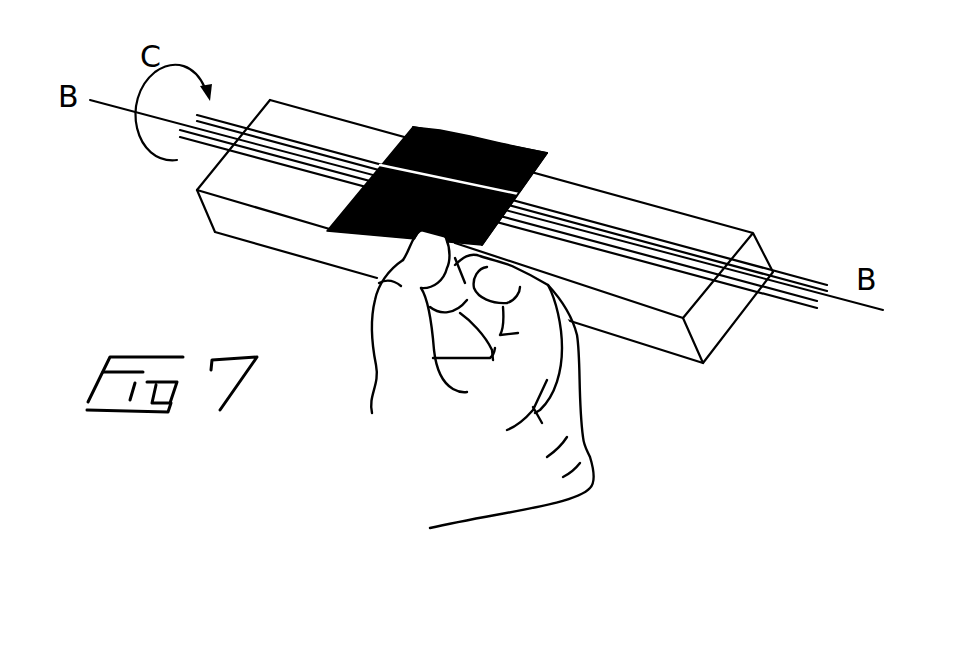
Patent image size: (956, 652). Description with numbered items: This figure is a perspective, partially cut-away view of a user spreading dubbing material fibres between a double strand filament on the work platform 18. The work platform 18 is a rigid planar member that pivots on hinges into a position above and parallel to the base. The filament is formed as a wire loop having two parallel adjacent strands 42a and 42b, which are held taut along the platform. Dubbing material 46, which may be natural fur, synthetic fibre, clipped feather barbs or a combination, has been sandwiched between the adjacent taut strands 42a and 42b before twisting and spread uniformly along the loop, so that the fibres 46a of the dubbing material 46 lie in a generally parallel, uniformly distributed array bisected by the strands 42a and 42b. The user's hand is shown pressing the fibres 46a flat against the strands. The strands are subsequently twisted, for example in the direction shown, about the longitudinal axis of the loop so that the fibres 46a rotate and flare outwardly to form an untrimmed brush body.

The work platform 18 is at (657, 222).
The strand 42a is at (285, 137).
The strand 42b is at (282, 160).
The dubbing material 46 is at (520, 128).
The fibres 46a is at (457, 128).